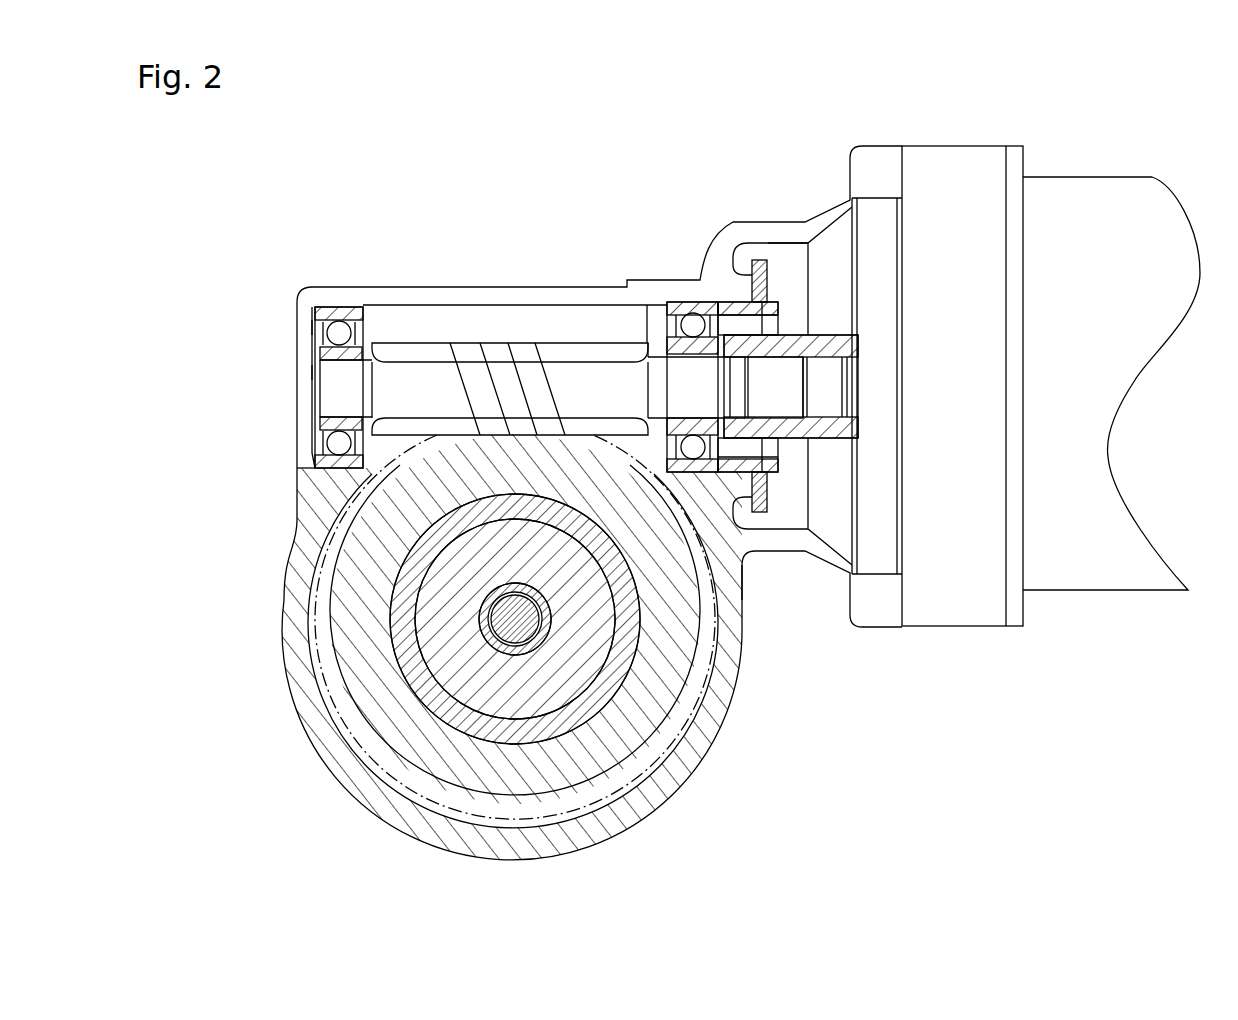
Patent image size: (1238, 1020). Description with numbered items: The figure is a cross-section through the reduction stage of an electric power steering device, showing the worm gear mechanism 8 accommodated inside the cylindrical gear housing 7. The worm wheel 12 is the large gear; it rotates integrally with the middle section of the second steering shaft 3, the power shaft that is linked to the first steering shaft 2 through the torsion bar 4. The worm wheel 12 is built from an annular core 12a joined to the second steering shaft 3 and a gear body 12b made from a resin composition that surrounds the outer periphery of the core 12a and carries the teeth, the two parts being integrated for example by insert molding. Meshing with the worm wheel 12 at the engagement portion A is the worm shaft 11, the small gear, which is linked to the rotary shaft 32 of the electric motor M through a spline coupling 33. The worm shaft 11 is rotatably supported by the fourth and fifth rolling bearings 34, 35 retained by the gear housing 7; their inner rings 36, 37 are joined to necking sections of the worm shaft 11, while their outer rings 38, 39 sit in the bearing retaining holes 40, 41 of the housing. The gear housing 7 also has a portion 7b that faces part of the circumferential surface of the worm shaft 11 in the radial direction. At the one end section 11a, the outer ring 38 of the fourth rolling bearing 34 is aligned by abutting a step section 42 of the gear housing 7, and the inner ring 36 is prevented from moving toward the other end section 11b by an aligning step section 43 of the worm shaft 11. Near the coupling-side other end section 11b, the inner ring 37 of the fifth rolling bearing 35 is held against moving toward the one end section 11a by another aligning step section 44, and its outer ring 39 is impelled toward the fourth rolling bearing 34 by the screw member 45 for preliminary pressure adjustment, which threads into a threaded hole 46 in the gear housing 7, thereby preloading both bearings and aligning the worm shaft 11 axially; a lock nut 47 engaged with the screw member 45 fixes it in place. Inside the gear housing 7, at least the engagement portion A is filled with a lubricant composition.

The first steering shaft 2 is at (502, 653).
The second steering shaft 3 is at (463, 660).
The torsion bar 4 is at (517, 642).
The gear housing 7 is at (645, 805).
The portion of the gear housing 7b is at (467, 312).
The worm gear mechanism 8 is at (500, 318).
The worm shaft 11 is at (403, 340).
The one end section of the worm shaft 11a is at (330, 388).
The other end section of the worm shaft 11b is at (795, 385).
The worm wheel 12 is at (423, 619).
The core 12a is at (407, 657).
The gear body 12b is at (353, 713).
The rotary shaft 32 is at (822, 438).
The spline coupling 33 is at (787, 438).
The fourth rolling bearing 34 is at (306, 332).
The fifth rolling bearing 35 is at (632, 317).
The inner ring of the fourth rolling bearing 36 is at (322, 428).
The inner ring of the fifth rolling bearing 37 is at (645, 345).
The outer ring of the fourth rolling bearing 38 is at (343, 306).
The outer ring of the fifth rolling bearing 39 is at (703, 300).
The bearing retaining hole 40 is at (340, 473).
The bearing retaining hole 41 is at (742, 560).
The step section 42 is at (312, 328).
The aligning step section 43 is at (330, 385).
The aligning step section 44 is at (670, 407).
The screw member 45 is at (772, 298).
The threaded hole 46 is at (763, 515).
The lock nut 47 is at (755, 260).
The engagement portion A is at (518, 420).
The electric motor M is at (1080, 174).